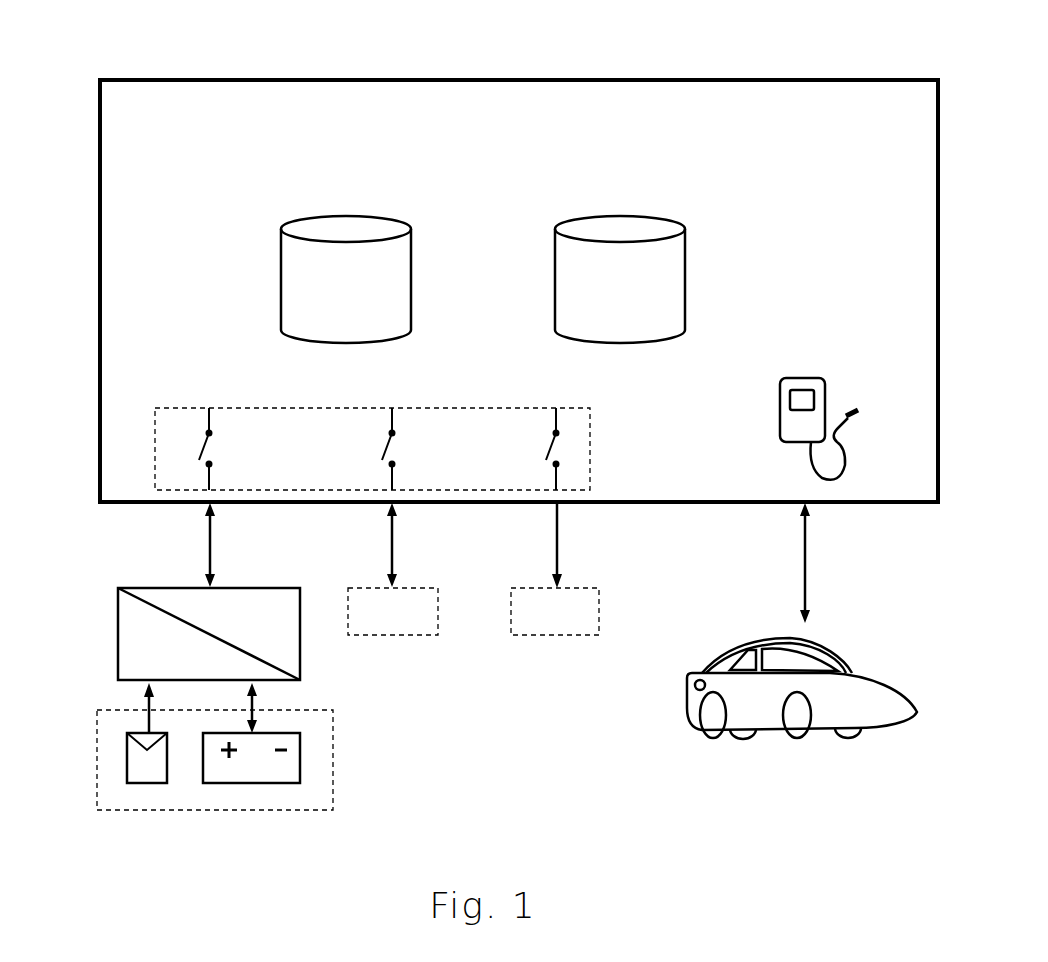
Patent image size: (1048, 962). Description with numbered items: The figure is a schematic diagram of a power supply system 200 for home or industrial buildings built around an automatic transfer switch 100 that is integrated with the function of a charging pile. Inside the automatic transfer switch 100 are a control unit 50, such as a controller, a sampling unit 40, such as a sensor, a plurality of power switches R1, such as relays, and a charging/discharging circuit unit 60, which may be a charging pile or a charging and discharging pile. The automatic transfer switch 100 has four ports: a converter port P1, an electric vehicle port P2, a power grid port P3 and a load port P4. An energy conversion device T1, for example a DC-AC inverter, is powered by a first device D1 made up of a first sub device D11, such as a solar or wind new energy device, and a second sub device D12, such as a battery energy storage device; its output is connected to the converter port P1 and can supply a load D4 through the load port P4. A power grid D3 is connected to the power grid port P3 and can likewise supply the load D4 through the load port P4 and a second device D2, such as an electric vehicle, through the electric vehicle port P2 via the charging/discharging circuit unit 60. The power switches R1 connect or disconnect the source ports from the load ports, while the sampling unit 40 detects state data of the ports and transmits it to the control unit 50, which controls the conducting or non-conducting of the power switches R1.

The power supply system 200 is at (519, 256).
The automatic transfer switch 100 is at (519, 291).
The control unit 50 is at (334, 224).
The sampling unit 40 is at (615, 224).
The charging/discharging circuit unit 60 is at (805, 374).
The power switches R1 is at (211, 404).
The converter port P1 is at (192, 545).
The electric vehicle port P2 is at (787, 563).
The power grid port P3 is at (374, 545).
The load port P4 is at (539, 545).
The energy conversion device T1 is at (258, 586).
The first device D1 is at (216, 751).
The second device D2 is at (873, 670).
The power grid D3 is at (428, 587).
The load D4 is at (588, 587).
The first sub device D11 is at (127, 765).
The second sub device D12 is at (300, 757).